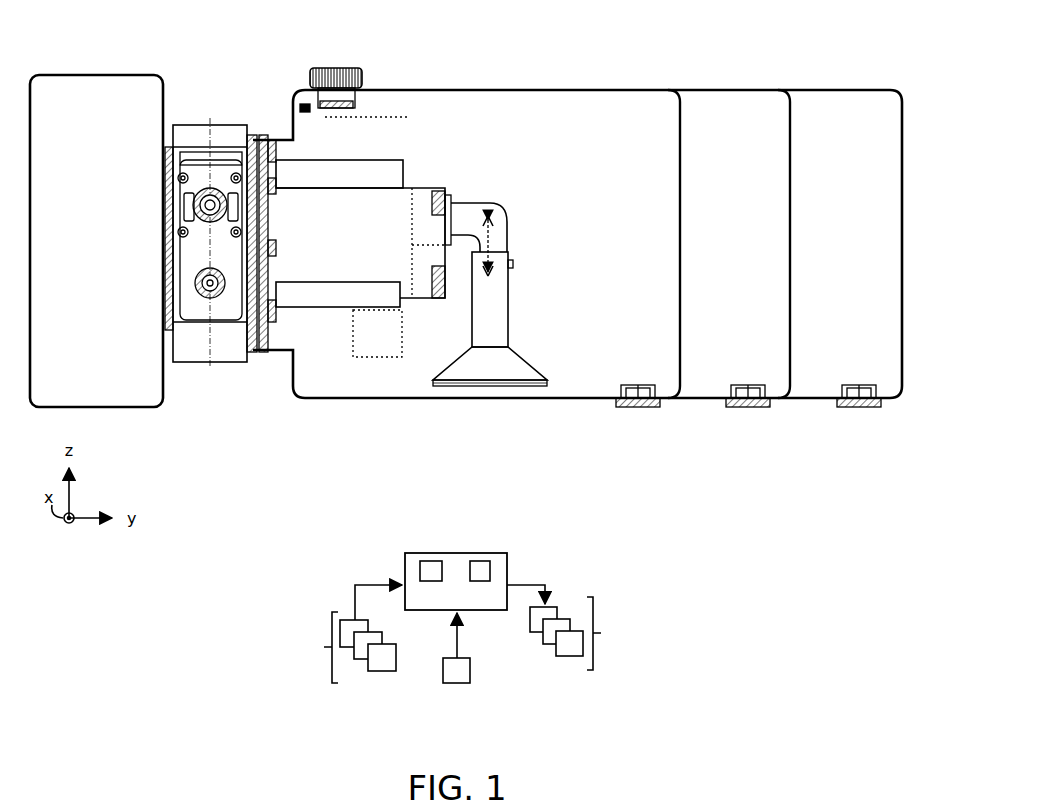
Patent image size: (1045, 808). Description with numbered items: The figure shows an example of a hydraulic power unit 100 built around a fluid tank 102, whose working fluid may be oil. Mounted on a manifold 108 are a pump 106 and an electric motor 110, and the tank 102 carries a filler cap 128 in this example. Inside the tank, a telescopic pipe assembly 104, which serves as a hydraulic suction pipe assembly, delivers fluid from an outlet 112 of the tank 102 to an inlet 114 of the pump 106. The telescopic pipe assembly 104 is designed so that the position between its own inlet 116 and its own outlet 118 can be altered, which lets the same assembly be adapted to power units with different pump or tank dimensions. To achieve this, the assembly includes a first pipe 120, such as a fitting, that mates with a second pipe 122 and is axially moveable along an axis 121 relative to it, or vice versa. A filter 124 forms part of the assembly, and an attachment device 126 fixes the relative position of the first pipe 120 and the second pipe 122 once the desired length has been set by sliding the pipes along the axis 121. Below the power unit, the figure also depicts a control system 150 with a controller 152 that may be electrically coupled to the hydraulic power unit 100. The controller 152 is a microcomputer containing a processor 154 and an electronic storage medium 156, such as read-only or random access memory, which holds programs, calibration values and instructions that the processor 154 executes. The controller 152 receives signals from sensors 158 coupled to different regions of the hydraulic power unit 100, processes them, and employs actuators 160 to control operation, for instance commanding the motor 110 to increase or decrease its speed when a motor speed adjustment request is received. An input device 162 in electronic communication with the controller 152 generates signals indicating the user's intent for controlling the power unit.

The hydraulic power unit 100 is at (918, 48).
The fluid tank 102 is at (621, 82).
The telescopic pipe assembly 104 is at (509, 292).
The pump 106 is at (426, 157).
The manifold 108 is at (226, 104).
The electric motor 110 is at (100, 60).
The outlet 112 is at (508, 386).
The inlet 114 is at (450, 200).
The inlet 116 is at (547, 369).
The outlet 118 is at (452, 245).
The first pipe 120 is at (495, 230).
The axis 121 is at (490, 243).
The second pipe 122 is at (503, 310).
The filter 124 is at (505, 357).
The attachment device 126 is at (513, 265).
The filler cap 128 is at (340, 65).
The control system 150 is at (337, 570).
The controller 152 is at (455, 553).
The processor 154 is at (418, 561).
The electronic storage medium 156 is at (492, 562).
The sensors 158 is at (341, 634).
The actuators 160 is at (574, 627).
The input device 162 is at (457, 683).